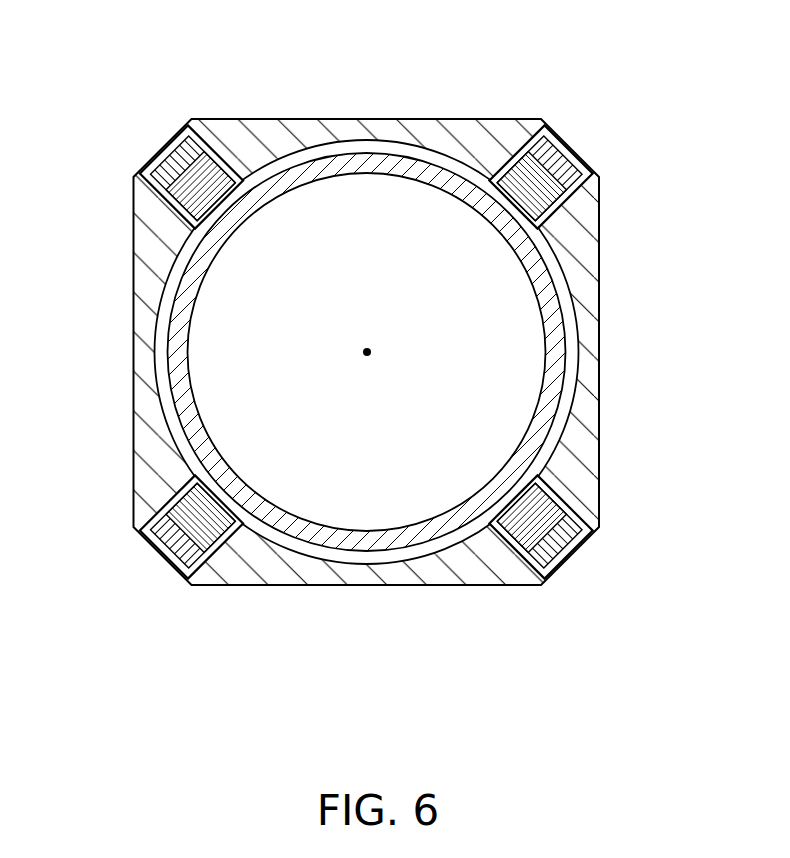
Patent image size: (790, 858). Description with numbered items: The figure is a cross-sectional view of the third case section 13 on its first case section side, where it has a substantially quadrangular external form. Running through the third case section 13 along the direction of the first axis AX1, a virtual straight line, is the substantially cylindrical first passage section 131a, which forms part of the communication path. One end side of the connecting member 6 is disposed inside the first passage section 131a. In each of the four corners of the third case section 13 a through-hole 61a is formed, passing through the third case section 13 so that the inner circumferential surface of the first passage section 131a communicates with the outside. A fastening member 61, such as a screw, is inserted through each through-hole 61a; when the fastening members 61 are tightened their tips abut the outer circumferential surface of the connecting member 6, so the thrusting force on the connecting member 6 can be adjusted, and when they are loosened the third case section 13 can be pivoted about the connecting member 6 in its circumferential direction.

The third case section 13 is at (342, 118).
The first passage section 131a is at (168, 412).
The connecting member 6 is at (567, 352).
The fastening member 61 is at (183, 155).
The through-hole 61a is at (228, 176).
The first axis AX1 is at (368, 345).